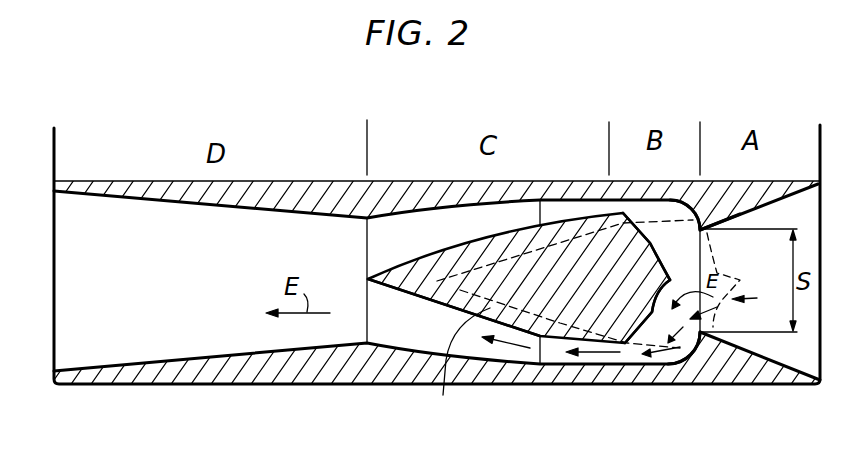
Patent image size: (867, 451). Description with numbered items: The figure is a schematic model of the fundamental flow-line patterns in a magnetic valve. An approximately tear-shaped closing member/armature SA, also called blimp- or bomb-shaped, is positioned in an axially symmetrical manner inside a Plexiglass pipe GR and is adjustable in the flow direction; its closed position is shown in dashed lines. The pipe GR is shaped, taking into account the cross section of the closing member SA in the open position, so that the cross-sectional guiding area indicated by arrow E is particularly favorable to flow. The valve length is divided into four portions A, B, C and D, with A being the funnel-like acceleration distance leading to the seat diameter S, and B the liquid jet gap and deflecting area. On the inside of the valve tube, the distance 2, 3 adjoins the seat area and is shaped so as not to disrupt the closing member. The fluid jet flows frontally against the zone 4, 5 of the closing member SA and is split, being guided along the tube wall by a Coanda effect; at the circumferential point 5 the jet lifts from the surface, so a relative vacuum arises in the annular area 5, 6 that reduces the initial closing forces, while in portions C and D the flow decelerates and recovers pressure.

The inner valve tube position 2 is at (705, 213).
The inner valve tube position 3 is at (433, 250).
The closing member frontal zone position 4 is at (655, 304).
The circumferential point of closing member 5 is at (646, 246).
The closing member annular area position 6 is at (433, 250).
The closing member/armature SA is at (454, 351).
The Plexiglass pipe GR is at (698, 368).